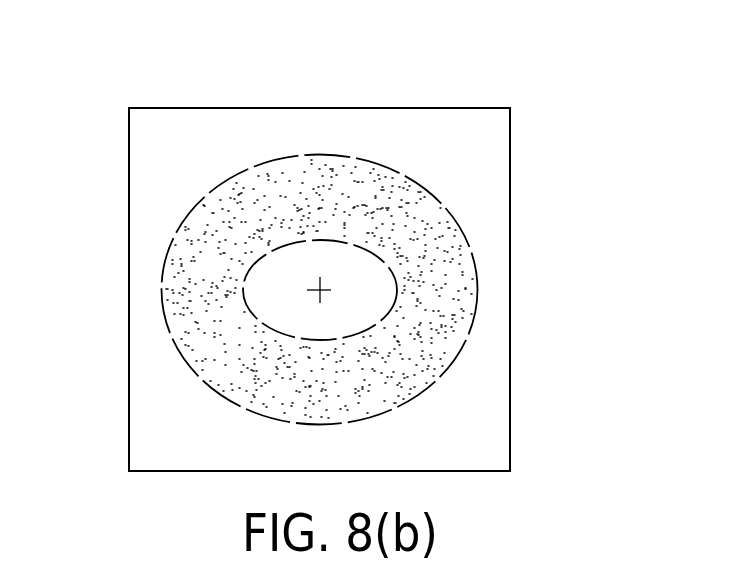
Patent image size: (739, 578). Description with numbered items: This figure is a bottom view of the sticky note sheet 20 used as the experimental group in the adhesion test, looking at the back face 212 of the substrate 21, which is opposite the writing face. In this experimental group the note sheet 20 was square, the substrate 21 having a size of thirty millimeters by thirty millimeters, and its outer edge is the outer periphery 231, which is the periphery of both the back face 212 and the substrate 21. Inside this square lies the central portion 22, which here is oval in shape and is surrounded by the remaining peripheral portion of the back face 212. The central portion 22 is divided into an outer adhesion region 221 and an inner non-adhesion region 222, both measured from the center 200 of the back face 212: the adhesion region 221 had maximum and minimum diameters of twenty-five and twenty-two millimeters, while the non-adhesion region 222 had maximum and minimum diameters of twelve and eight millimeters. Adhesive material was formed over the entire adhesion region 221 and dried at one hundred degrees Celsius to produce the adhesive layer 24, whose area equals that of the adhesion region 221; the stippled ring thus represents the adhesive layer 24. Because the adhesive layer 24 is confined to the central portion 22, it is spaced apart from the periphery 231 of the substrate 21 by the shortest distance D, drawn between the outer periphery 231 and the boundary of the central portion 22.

The note sheet 20 is at (516, 101).
The substrate 21 is at (512, 210).
The central portion 22 is at (292, 289).
The adhesion region 221 is at (223, 197).
The non-adhesion region 222 is at (262, 272).
The adhesive layer 24 is at (447, 267).
The center 200 is at (323, 294).
The back face 212 is at (154, 423).
The outer periphery 231 is at (510, 428).
The shortest distance D is at (161, 290).